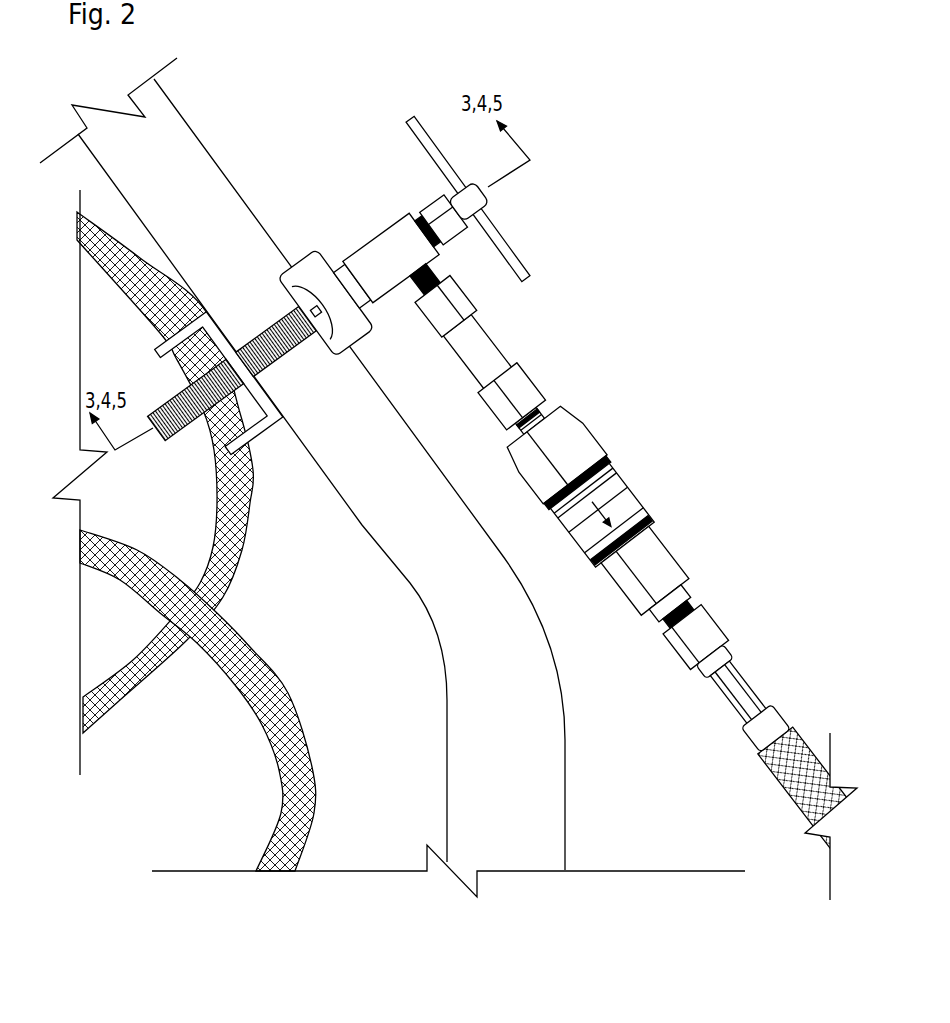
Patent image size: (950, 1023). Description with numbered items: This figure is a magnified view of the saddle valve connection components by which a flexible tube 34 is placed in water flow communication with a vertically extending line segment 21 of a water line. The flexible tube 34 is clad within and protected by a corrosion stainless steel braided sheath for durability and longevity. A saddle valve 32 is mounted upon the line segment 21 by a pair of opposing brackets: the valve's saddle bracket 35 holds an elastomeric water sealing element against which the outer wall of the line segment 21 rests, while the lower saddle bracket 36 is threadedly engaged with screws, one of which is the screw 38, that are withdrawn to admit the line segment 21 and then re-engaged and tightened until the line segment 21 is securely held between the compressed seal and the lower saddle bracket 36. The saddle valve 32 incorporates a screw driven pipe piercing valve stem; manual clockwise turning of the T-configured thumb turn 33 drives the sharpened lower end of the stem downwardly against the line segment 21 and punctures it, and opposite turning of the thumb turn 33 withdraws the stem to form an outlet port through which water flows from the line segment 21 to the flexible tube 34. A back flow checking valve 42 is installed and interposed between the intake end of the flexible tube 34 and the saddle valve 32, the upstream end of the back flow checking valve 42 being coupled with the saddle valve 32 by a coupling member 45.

The line segment 21 is at (197, 173).
The saddle valve 32 is at (394, 243).
The thumb turn 33 is at (520, 264).
The flexible tube 34 is at (290, 727).
The saddle bracket 35 is at (353, 330).
The lower saddle bracket 36 is at (257, 423).
The screw 38 is at (160, 414).
The back flow checking valve 42 is at (613, 503).
The coupling member 45 is at (483, 347).